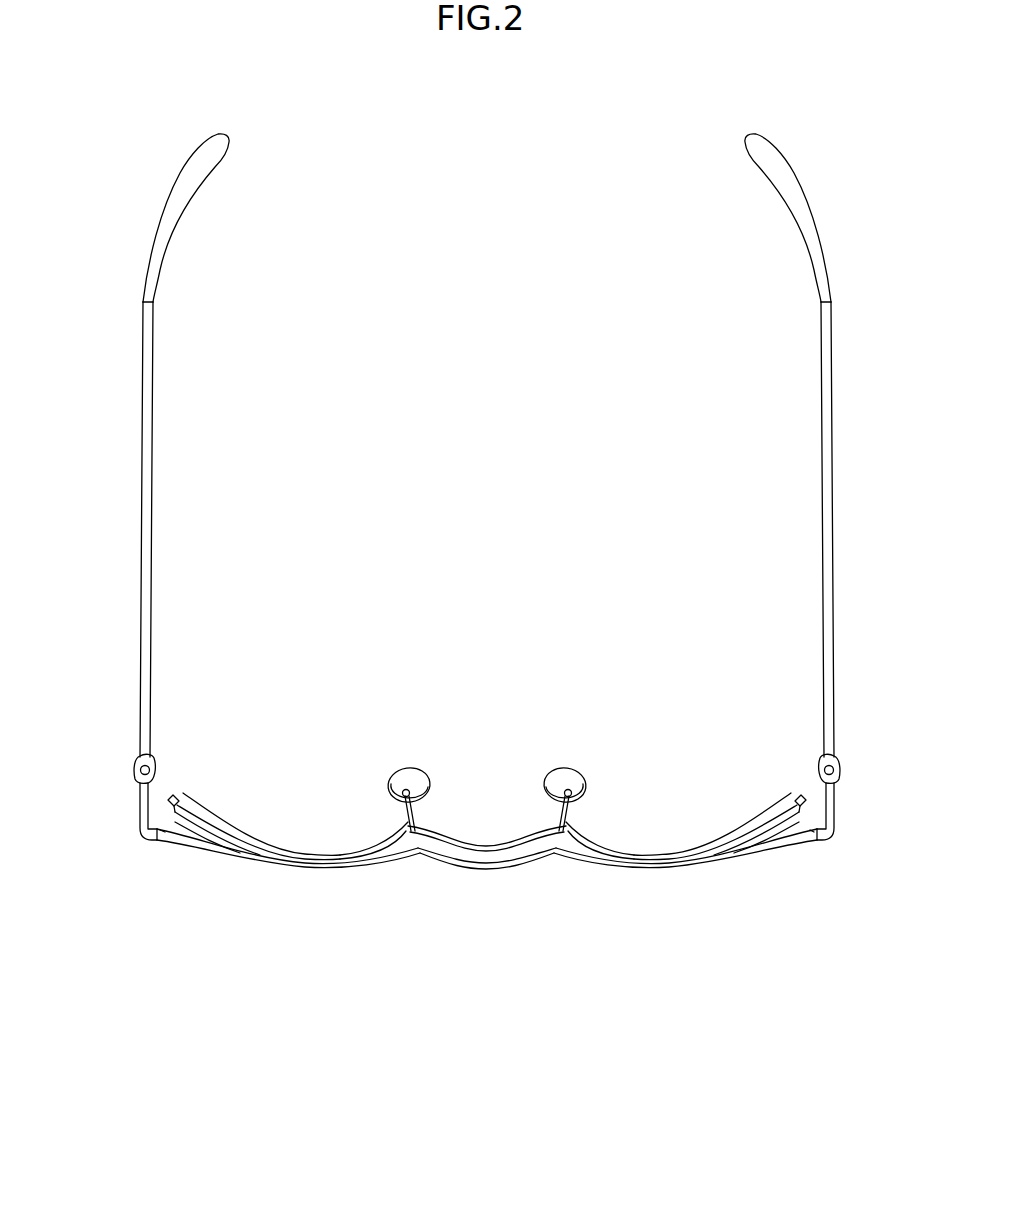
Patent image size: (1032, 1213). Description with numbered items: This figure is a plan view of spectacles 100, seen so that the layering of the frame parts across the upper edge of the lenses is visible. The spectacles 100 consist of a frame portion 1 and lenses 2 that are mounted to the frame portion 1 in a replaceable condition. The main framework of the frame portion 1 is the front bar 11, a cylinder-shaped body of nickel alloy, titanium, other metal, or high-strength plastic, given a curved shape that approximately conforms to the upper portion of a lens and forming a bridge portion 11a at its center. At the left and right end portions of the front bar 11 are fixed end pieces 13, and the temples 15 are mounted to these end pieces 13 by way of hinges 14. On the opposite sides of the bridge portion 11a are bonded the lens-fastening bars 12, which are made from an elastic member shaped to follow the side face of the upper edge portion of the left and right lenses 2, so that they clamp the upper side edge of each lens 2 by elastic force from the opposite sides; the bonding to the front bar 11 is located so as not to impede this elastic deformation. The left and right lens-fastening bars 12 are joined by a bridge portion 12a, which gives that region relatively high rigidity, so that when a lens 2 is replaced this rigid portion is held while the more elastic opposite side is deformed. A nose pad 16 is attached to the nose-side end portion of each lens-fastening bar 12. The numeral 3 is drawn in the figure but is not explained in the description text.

The spectacles 100 is at (737, 921).
The frame portion 1 is at (235, 881).
The lenses 2 is at (202, 816).
The lens 3 is at (170, 798).
The front bar 11 is at (323, 866).
The bridge portion 11a is at (500, 866).
The lens-fastening bar 12 is at (375, 838).
The bridge portion 12a is at (488, 842).
The end pieces 13 is at (140, 828).
The hinges 14 is at (148, 756).
The temples 15 is at (152, 392).
The nose pad 16 is at (413, 766).